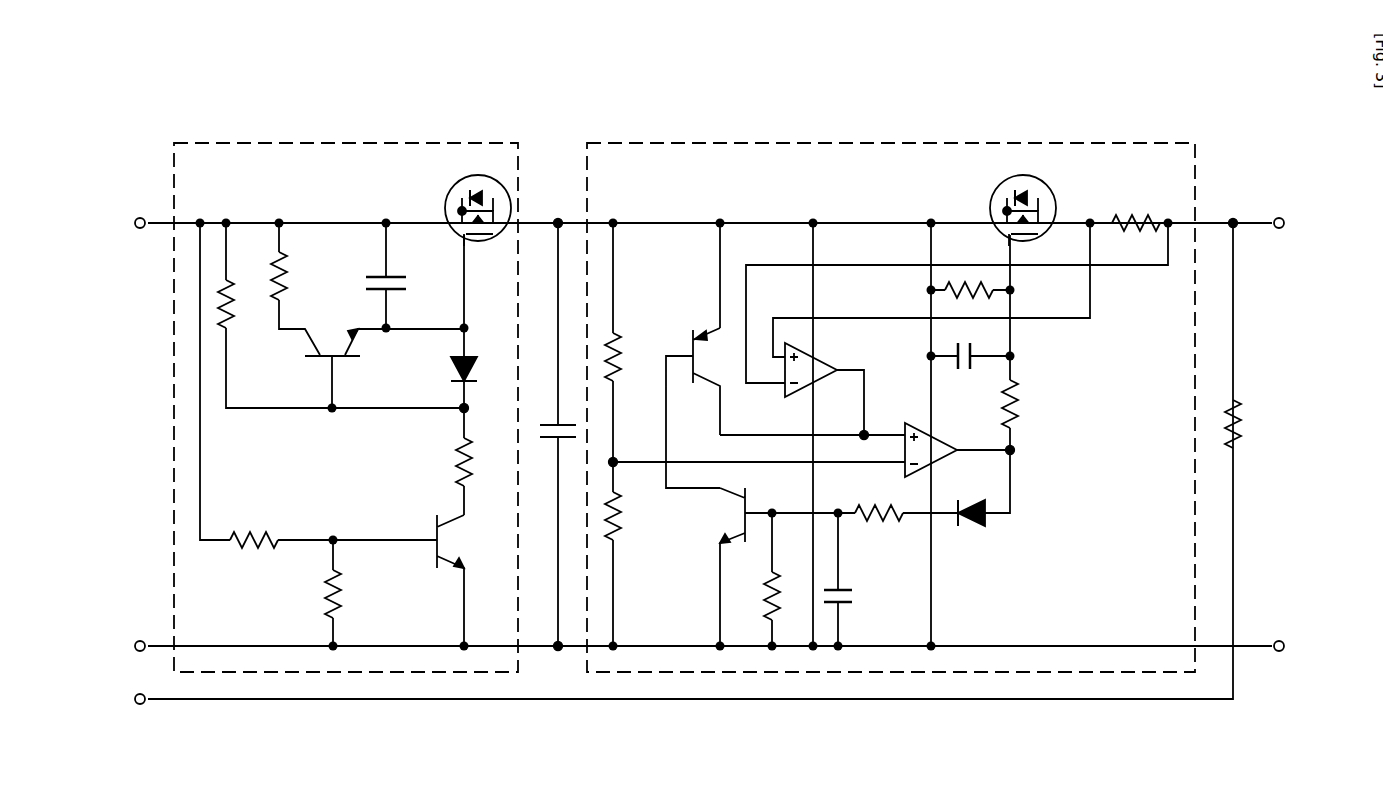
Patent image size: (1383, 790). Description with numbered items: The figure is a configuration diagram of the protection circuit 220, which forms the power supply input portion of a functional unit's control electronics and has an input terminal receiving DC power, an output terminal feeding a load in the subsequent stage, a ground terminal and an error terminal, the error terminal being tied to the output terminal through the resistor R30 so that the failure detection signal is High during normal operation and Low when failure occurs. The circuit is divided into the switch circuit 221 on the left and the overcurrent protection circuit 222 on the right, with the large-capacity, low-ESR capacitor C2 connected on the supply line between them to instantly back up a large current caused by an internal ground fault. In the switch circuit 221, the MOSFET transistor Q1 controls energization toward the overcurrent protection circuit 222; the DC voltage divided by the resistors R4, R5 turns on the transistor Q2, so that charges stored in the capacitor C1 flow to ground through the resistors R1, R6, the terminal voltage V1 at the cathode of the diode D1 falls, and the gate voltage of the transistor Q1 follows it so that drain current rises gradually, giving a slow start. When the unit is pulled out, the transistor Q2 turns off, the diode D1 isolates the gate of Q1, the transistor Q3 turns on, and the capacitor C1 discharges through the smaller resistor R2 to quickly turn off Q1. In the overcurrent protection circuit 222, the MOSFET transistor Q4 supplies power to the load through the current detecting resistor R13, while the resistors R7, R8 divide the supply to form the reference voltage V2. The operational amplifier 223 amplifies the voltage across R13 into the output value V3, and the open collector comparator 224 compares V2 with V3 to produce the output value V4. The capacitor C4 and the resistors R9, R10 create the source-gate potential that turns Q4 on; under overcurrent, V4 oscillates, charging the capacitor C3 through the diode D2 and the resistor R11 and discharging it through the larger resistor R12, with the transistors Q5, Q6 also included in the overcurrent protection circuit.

The protection circuit 220 is at (677, 66).
The switch circuit 221 is at (410, 143).
The overcurrent protection circuit 222 is at (932, 143).
The operational amplifier 223 is at (838, 358).
The comparator 224 is at (918, 424).
The transistor Q1 is at (464, 210).
The transistor Q2 is at (464, 580).
The transistor Q3 is at (384, 355).
The transistor Q4 is at (1009, 210).
The transistor Q5 is at (775, 567).
The transistor Q6 is at (701, 408).
The resistor R1 is at (243, 317).
The resistor R2 is at (302, 273).
The resistor R4 is at (333, 527).
The resistor R5 is at (351, 601).
The resistor R6 is at (447, 462).
The resistor R7 is at (630, 341).
The resistor R8 is at (630, 528).
The resistor R9 is at (1004, 291).
The resistor R10 is at (1040, 404).
The resistor R11 is at (883, 531).
The resistor R12 is at (753, 587).
The resistor R13 is at (1136, 206).
The resistor R30 is at (1259, 409).
The capacitor C1 is at (402, 268).
The capacitor C2 is at (551, 434).
The capacitor C3 is at (857, 603).
The capacitor C4 is at (964, 372).
The diode D1 is at (448, 371).
The diode D2 is at (991, 526).
The terminal voltage V1 is at (484, 408).
The reference voltage V2 is at (633, 448).
The output value V3 is at (852, 422).
The output value V4 is at (1030, 449).